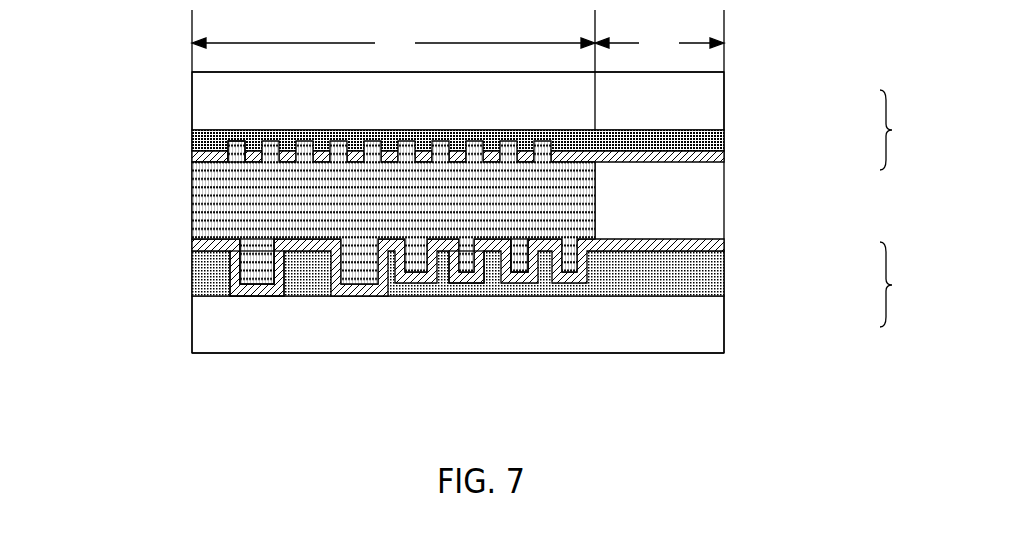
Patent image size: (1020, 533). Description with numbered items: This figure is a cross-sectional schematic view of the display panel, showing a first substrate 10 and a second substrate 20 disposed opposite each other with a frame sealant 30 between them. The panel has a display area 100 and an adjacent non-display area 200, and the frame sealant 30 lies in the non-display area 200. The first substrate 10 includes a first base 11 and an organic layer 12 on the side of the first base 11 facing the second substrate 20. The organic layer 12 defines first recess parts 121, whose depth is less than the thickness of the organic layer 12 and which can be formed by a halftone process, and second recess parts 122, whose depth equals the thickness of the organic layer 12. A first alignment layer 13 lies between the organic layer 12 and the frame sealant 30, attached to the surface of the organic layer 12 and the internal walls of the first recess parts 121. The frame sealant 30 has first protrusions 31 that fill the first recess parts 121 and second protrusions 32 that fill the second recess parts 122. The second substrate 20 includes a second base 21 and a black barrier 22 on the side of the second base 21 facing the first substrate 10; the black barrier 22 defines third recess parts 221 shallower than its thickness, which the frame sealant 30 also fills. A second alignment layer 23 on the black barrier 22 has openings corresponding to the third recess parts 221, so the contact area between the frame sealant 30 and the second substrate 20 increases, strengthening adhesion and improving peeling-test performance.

The first substrate 10 is at (902, 284).
The first base 11 is at (724, 328).
The organic layer 12 is at (724, 285).
The first recess part 121 is at (472, 286).
The second recess part 122 is at (258, 290).
The first alignment layer 13 is at (724, 247).
The second substrate 20 is at (904, 130).
The second base 21 is at (724, 97).
The black barrier 22 is at (724, 142).
The third recess part 221 is at (235, 139).
The second alignment layer 23 is at (724, 163).
The frame sealant 30 is at (192, 204).
The first protrusion 31 is at (522, 272).
The second protrusion 32 is at (236, 262).
The display area 100 is at (659, 43).
The non-display area 200 is at (393, 43).